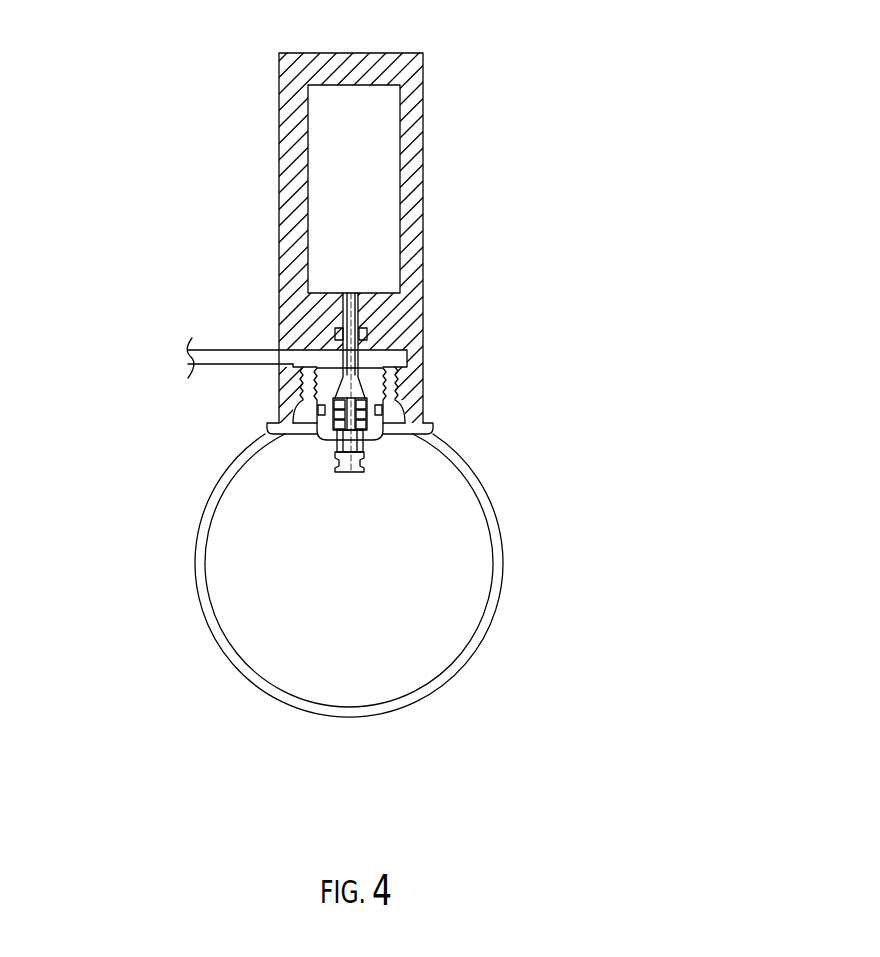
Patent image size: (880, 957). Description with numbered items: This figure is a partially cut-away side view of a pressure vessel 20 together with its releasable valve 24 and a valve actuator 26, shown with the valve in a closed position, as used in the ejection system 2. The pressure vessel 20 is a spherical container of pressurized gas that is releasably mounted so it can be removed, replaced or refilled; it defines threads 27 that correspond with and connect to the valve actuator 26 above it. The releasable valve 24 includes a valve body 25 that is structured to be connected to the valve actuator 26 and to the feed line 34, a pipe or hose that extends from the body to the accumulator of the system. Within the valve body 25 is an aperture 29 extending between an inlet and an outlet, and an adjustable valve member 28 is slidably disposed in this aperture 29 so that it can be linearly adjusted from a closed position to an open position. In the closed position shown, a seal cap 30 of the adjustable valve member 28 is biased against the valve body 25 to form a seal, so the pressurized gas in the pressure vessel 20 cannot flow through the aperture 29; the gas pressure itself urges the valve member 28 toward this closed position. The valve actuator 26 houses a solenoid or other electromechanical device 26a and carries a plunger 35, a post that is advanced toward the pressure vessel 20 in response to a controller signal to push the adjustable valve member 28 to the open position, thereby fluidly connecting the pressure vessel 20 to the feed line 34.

The pressure relief device 2 is at (308, 115).
The pressure vessel 20 is at (287, 708).
The releasable valve 24 is at (383, 470).
The valve body 25 is at (380, 428).
The valve actuator 26 is at (423, 105).
The solenoid or other electromechanical device 26a is at (365, 175).
The threads 27 is at (403, 393).
The adjustable valve member 28 is at (336, 417).
The aperture 29 is at (380, 440).
The seal cap 30 is at (336, 362).
The feed line 34 is at (212, 348).
The plunger 35 is at (366, 313).